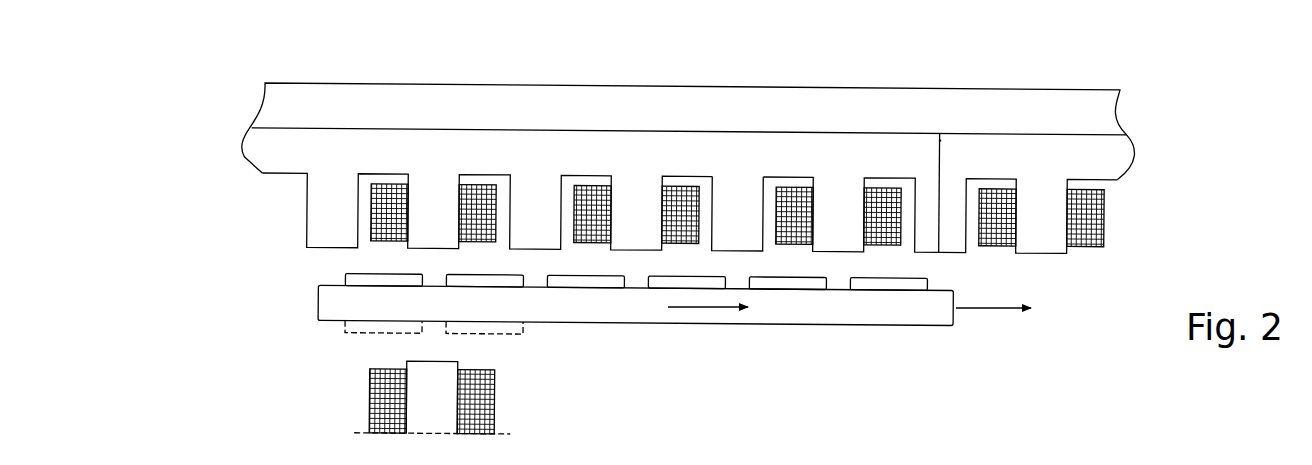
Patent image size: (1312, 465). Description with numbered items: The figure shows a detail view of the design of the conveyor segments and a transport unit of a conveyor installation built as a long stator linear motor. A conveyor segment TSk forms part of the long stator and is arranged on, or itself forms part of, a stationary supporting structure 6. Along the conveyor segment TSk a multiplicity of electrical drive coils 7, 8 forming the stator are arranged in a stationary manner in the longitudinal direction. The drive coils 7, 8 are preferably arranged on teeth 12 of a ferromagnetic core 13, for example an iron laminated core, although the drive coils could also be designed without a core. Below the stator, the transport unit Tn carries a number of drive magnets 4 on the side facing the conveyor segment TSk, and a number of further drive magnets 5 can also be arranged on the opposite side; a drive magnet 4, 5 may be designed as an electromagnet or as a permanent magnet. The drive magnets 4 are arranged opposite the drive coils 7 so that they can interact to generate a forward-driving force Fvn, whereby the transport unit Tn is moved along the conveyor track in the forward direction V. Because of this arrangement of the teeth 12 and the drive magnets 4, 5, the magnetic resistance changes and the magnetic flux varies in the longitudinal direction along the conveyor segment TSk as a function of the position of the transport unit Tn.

The drive magnet 4 is at (368, 282).
The drive magnet 5 is at (365, 325).
The stationary supporting structure 6 is at (458, 110).
The drive coil 7 is at (393, 182).
The drive coil 8 is at (382, 393).
The tooth 12 is at (440, 218).
The ferromagnetic core 13 is at (705, 157).
The conveyor segment TSk is at (843, 163).
The transport unit Tn is at (887, 307).
The forward-driving force Fvn is at (702, 308).
The forward direction V is at (1004, 310).